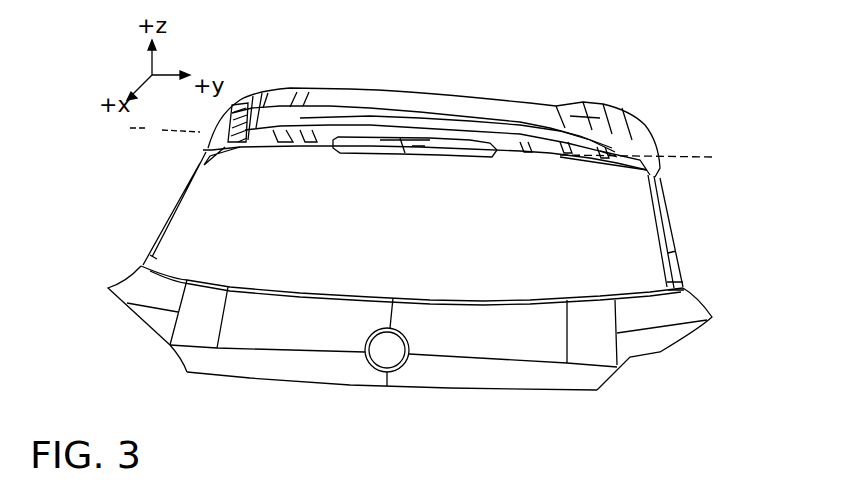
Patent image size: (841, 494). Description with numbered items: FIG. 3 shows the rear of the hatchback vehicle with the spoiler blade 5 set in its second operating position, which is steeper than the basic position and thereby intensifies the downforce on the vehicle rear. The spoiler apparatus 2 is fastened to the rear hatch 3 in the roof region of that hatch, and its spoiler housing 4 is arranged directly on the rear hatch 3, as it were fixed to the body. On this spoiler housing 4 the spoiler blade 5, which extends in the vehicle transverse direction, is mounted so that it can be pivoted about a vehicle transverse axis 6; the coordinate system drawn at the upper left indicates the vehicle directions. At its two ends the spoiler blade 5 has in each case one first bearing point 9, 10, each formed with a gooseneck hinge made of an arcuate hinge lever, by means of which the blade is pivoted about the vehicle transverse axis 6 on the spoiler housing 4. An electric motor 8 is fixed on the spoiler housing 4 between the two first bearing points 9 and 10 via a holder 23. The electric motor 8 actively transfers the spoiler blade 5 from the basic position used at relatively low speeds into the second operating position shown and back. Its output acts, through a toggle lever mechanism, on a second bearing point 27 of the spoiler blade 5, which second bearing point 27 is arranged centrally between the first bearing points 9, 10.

The spoiler apparatus 2 is at (465, 94).
The rear hatch 3 is at (207, 373).
The spoiler housing 4 is at (541, 110).
The spoiler blade 5 is at (469, 110).
The vehicle transverse axis 6 is at (148, 130).
The electric motor 8 is at (476, 128).
The first bearing point 9 is at (232, 114).
The first bearing point 10 is at (635, 144).
The holder 23 is at (352, 133).
The second bearing point 27 is at (416, 119).